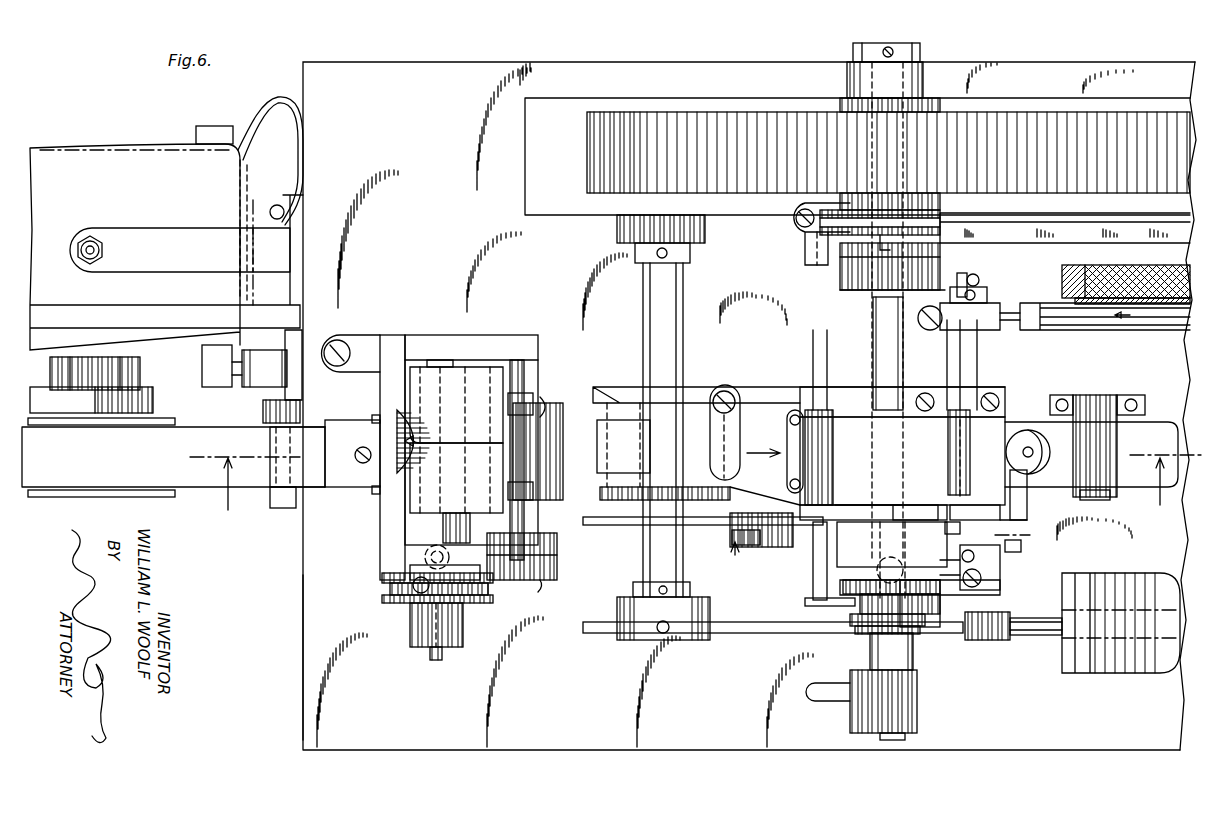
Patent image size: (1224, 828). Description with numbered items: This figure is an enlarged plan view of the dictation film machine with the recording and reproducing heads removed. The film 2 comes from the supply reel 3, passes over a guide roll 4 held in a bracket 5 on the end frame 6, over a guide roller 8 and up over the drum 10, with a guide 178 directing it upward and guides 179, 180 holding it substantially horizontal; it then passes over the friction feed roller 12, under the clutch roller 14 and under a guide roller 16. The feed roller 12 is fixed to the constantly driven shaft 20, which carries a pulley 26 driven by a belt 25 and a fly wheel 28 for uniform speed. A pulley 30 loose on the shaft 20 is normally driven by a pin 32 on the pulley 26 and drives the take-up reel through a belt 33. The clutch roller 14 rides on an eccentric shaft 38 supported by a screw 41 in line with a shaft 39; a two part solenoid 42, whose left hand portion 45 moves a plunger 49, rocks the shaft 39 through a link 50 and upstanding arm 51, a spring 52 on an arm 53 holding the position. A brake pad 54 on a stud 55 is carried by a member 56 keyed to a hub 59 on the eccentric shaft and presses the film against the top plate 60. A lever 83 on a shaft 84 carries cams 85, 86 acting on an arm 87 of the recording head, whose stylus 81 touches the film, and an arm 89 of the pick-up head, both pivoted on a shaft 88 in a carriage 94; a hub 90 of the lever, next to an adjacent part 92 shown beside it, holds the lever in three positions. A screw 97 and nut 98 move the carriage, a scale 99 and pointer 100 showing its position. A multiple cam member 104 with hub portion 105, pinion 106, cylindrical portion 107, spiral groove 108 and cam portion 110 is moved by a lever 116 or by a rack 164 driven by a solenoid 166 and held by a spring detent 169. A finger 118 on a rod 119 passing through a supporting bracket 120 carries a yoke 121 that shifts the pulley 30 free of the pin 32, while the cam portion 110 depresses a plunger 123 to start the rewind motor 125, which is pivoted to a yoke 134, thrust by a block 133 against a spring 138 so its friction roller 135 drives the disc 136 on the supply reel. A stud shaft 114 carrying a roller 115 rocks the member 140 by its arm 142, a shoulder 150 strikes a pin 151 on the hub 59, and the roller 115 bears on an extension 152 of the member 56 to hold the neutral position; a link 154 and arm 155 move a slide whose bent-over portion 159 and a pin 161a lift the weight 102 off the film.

The film 2 is at (1170, 410).
The supply reel 3 is at (160, 435).
The guide roll 4 is at (270, 506).
The bracket 5 is at (262, 410).
The end frame 6 is at (302, 580).
The guide roller 8 is at (784, 486).
The drum 10 is at (632, 395).
The friction feed roller 12 is at (836, 410).
The clutch roller 14 is at (950, 447).
The guide roller 16 is at (1090, 502).
The shaft 20 is at (872, 327).
The belt 25 is at (840, 275).
The pulley 26 is at (840, 290).
The fly wheel 28 is at (1046, 124).
The pulley 30 is at (902, 216).
The pin 32 is at (892, 238).
The belt 33 is at (1010, 243).
The eccentric shaft 38 is at (948, 530).
The shaft 39 is at (985, 376).
The screw 41 is at (988, 570).
The two part solenoid 42 is at (1136, 256).
The left hand portion of solenoid 45 is at (1131, 366).
The plunger 49 is at (1040, 330).
The link 50 is at (1008, 326).
The upstanding arm 51 is at (936, 329).
The spring 52 is at (981, 280).
The arm 53 is at (960, 274).
The brake pad 54 is at (1028, 502).
The stud 55 is at (1030, 452).
The member 56 is at (1028, 518).
The hub 59 is at (1030, 540).
The top plate 60 is at (1045, 757).
The stylus 81 is at (558, 543).
The lever 83 is at (409, 571).
The shaft 84 is at (548, 445).
The cam 85 is at (531, 402).
The cam 86 is at (533, 488).
The arm 87 is at (471, 369).
The shaft 88 is at (437, 360).
The arm 89 is at (554, 516).
The hub of lever 90 is at (545, 568).
The gear 92 is at (498, 575).
The carriage 94 is at (378, 550).
The screw 97 is at (443, 655).
The nut 98 is at (412, 630).
The scale 99 is at (396, 435).
The pointer 100 is at (406, 444).
The weight 102 is at (300, 490).
The manipulative member 104 is at (832, 592).
The hub portion 105 is at (924, 658).
The pinion 106 is at (925, 632).
The cylindrical portion 107 is at (940, 592).
The spiral groove 108 is at (942, 600).
The cam portion 110 is at (985, 580).
The stud shaft 114 is at (892, 552).
The roller 115 is at (832, 450).
The lever 116 is at (820, 682).
The finger 118 is at (840, 604).
The rod 119 is at (812, 352).
The supporting bracket 120 is at (804, 245).
The yoke 121 is at (812, 210).
The plunger 123 is at (924, 566).
The rewind motor 125 is at (130, 150).
The block 133 is at (217, 384).
The yoke 134 is at (164, 234).
The friction roller 135 is at (138, 373).
The disc 136 is at (153, 401).
The spring 138 is at (274, 110).
The member 140 is at (852, 522).
The arm 142 is at (896, 564).
The shoulder 150 is at (904, 518).
The pin 151 is at (961, 492).
The extension 152 is at (967, 510).
The link 154 is at (766, 548).
The arm 155 is at (702, 526).
The bent-over portion 159 is at (557, 589).
The pin 161a is at (374, 414).
The rack 164 is at (738, 634).
The solenoid 166 is at (1114, 672).
The spring detent 169 is at (660, 636).
The guide 178 is at (626, 518).
The guide 179 is at (736, 408).
The guide 180 is at (794, 408).